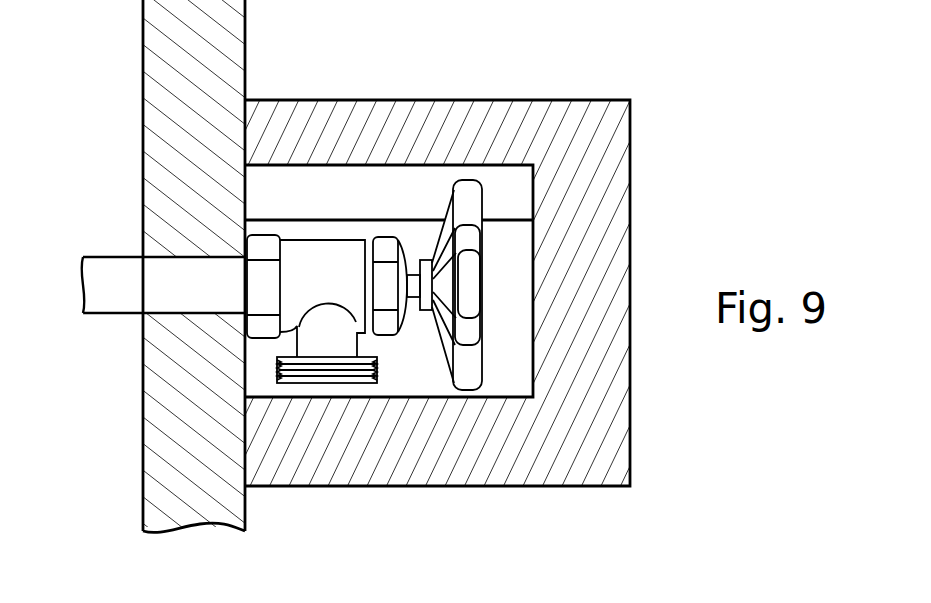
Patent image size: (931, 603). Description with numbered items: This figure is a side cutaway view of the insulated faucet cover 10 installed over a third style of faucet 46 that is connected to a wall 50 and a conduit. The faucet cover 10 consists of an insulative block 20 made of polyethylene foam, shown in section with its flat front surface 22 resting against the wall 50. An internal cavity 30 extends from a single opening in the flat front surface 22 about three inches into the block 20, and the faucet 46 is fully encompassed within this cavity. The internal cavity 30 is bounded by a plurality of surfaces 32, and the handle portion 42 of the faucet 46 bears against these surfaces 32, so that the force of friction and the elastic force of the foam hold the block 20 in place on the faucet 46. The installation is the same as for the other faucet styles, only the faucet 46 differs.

The insulated faucet cover 10 is at (717, 408).
The insulative block 20 is at (593, 434).
The flat front surface 22 is at (235, 155).
The internal cavity 30 is at (507, 265).
The plurality of surfaces 32 is at (502, 217).
The handle portion 42 is at (468, 178).
The faucet 46 is at (310, 277).
The wall 50 is at (160, 230).